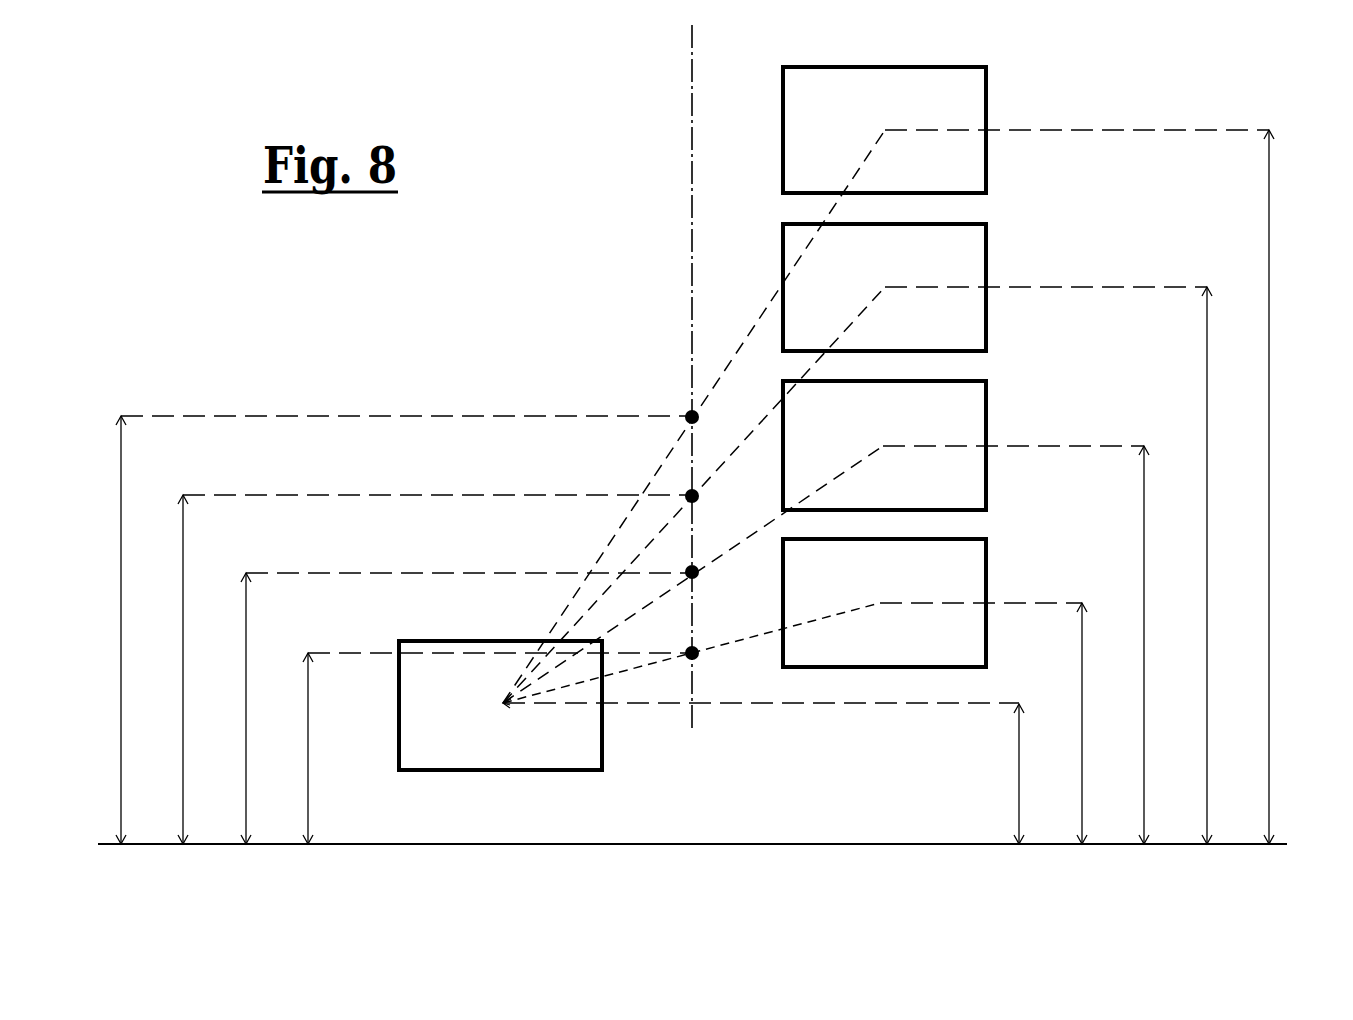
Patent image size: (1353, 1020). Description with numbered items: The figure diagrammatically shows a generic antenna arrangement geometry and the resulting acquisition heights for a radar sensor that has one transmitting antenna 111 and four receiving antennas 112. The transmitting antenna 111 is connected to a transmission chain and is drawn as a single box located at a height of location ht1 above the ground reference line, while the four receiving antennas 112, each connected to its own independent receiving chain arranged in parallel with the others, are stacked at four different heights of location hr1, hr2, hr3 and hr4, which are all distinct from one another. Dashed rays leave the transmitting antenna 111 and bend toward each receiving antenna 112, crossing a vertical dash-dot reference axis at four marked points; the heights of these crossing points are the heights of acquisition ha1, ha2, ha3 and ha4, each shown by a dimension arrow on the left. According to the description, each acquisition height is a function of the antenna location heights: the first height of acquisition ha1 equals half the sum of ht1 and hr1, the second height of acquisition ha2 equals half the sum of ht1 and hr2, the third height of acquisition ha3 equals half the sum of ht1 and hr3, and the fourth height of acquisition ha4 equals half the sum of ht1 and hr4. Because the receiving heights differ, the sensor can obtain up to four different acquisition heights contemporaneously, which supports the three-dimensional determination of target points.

The transmitting antenna 111 is at (624, 757).
The receiving antennas 112 is at (1004, 103).
The first height of acquisition ha1 is at (497, 748).
The second height of acquisition ha2 is at (466, 708).
The third height of acquisition ha3 is at (435, 669).
The fourth height of acquisition ha4 is at (404, 630).
The height of location of the transmitting antenna ht1 is at (780, 773).
The height of location of the first receiving antenna hr1 is at (1000, 723).
The height of location of the second receiving antenna hr2 is at (1033, 645).
The height of location of the third receiving antenna hr3 is at (1065, 565).
The height of location of the fourth receiving antenna hr4 is at (1096, 487).